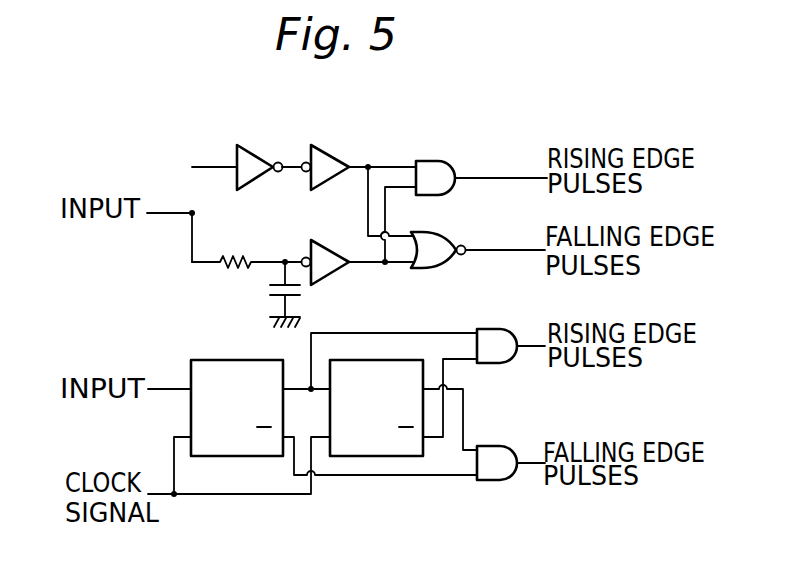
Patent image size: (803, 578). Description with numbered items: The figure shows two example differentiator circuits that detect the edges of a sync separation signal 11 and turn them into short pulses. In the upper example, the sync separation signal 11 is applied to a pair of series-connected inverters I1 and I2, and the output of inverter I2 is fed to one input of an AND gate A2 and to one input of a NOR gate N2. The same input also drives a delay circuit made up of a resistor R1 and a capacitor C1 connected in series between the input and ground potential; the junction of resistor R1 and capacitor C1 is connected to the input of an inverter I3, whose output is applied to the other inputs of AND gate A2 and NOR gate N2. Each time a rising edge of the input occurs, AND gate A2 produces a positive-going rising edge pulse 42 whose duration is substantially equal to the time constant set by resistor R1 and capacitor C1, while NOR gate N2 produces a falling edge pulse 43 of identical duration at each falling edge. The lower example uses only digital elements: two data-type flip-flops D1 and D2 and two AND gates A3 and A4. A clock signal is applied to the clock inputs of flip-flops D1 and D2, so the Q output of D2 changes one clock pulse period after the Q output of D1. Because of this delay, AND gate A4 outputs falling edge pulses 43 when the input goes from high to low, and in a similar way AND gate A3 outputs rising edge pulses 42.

The sync separation signal 11 is at (170, 212).
The rising edge pulse 42 is at (519, 177).
The falling edge pulse 43 is at (520, 251).
The inverter I1 is at (260, 151).
The inverter I2 is at (326, 151).
The inverter I3 is at (326, 250).
The AND gate A2 is at (443, 161).
The NOR gate N2 is at (453, 242).
The resistor R1 is at (246, 247).
The capacitor C1 is at (270, 295).
The data-type flip-flop D1 is at (244, 360).
The data-type flip-flop D2 is at (397, 457).
The AND gate A3 is at (504, 328).
The AND gate A4 is at (502, 446).